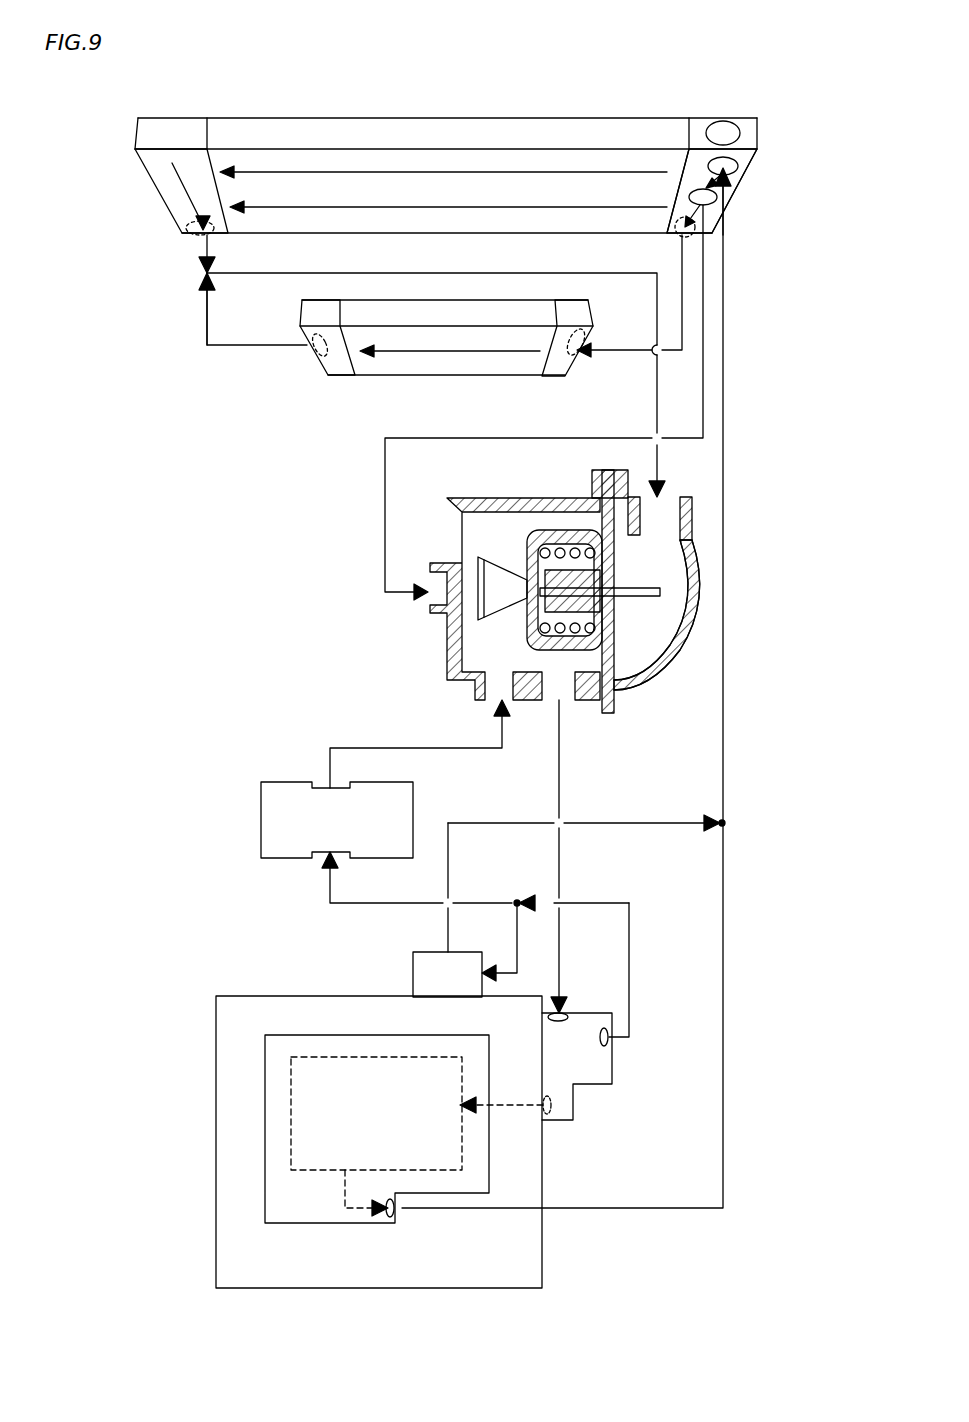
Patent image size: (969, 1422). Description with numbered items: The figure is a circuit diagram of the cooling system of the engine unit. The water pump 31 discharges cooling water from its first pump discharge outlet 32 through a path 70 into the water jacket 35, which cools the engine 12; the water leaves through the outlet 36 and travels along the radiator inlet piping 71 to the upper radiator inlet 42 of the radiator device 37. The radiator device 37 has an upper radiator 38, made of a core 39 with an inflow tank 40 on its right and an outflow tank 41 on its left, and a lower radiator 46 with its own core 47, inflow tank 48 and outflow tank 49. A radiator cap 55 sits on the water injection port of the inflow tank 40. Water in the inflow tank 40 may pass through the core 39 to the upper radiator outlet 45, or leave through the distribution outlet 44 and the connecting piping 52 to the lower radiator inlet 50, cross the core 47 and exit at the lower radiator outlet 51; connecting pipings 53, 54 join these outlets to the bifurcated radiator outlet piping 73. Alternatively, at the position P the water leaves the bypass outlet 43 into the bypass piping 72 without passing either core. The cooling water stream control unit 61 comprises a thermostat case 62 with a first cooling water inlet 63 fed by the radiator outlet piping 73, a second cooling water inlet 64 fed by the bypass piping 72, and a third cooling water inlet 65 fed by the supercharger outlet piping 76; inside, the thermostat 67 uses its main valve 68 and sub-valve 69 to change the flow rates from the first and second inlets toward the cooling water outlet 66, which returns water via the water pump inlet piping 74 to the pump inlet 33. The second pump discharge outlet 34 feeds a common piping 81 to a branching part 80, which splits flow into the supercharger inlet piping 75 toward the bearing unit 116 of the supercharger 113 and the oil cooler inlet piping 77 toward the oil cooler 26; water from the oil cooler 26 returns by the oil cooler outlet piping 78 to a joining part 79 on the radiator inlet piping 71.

The engine 12 is at (401, 1129).
The oil cooler 26 is at (412, 975).
The water pump 31 is at (612, 1087).
The first pump discharge outlet 32 is at (551, 1112).
The pump inlet 33 is at (566, 1012).
The second pump discharge outlet 34 is at (609, 1040).
The water jacket 35 is at (291, 1110).
The outlet 36 is at (386, 1218).
The radiator device 37 is at (434, 158).
The upper radiator 38 is at (138, 117).
The core 39 is at (425, 125).
The inflow tank 40 is at (742, 182).
The outflow tank 41 is at (155, 190).
The upper radiator inlet 42 is at (742, 168).
The bypass outlet 43 is at (700, 195).
The position P is at (700, 190).
The distribution outlet 44 is at (676, 232).
The upper radiator outlet 45 is at (186, 230).
The lower radiator 46 is at (442, 361).
The core 47 is at (402, 376).
The inflow tank 48 is at (568, 366).
The outflow tank 49 is at (325, 372).
The lower radiator inlet 50 is at (588, 340).
The lower radiator outlet 51 is at (312, 352).
The connecting piping 52 is at (682, 270).
The connecting piping 53 is at (198, 260).
The connecting piping 54 is at (207, 330).
The radiator cap 55 is at (723, 121).
The cooling water stream control unit 61 is at (539, 597).
The thermostat case 62 is at (495, 498).
The first cooling water inlet 63 is at (668, 498).
The second cooling water inlet 64 is at (430, 598).
The third cooling water inlet 65 is at (492, 700).
The cooling water outlet 66 is at (562, 703).
The thermostat 67 is at (555, 530).
The main valve 68 is at (628, 628).
The sub-valve 69 is at (500, 615).
The path 70 is at (540, 1100).
The radiator inlet piping 71 is at (724, 748).
The bypass piping 72 is at (385, 512).
The radiator outlet piping 73 is at (275, 276).
The water pump inlet piping 74 is at (562, 778).
The supercharger inlet piping 75 is at (332, 905).
The supercharger outlet piping 76 is at (355, 748).
The oil cooler inlet piping 77 is at (517, 922).
The oil cooler outlet piping 78 is at (640, 826).
The joining part 79 is at (728, 823).
The branching part 80 is at (517, 900).
The common piping 81 is at (630, 958).
The supercharger 113 is at (255, 868).
The bearing unit 116 is at (318, 858).